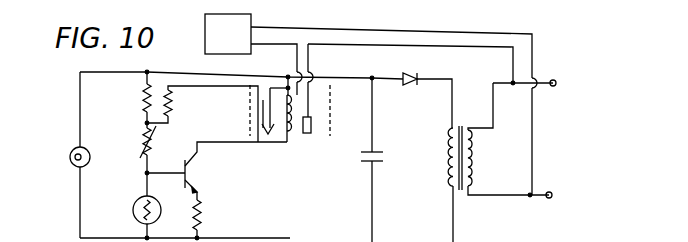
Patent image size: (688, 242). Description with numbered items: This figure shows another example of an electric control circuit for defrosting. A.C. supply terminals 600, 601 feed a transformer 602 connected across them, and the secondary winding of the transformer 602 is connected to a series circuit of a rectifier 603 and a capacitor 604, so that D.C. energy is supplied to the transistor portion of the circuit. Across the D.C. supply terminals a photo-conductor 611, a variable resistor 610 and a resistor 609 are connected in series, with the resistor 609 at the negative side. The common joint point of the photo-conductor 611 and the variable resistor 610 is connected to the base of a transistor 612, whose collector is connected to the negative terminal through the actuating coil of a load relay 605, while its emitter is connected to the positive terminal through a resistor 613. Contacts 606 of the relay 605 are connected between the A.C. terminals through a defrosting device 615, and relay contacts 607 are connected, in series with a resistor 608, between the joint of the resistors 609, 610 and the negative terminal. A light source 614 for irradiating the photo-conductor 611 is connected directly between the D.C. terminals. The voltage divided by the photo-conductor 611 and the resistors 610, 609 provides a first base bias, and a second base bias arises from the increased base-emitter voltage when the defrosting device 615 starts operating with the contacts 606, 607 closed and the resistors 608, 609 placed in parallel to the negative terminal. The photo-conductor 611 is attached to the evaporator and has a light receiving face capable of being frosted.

The A.C. supply terminal 600 is at (544, 87).
The A.C. supply terminal 601 is at (561, 199).
The transformer 602 is at (458, 197).
The rectifier 603 is at (409, 68).
The capacitor 604 is at (385, 160).
The load relay 605 is at (313, 134).
The relay contacts 606 is at (296, 138).
The relay contacts 607 is at (258, 114).
The resistor 608 is at (202, 114).
The resistor 609 is at (125, 100).
The variable resistor 610 is at (128, 158).
The photo-conductor 611 is at (129, 215).
The transistor 612 is at (217, 171).
The resistor 613 is at (218, 219).
The light source 614 is at (72, 156).
The defrosting device 615 is at (246, 49).